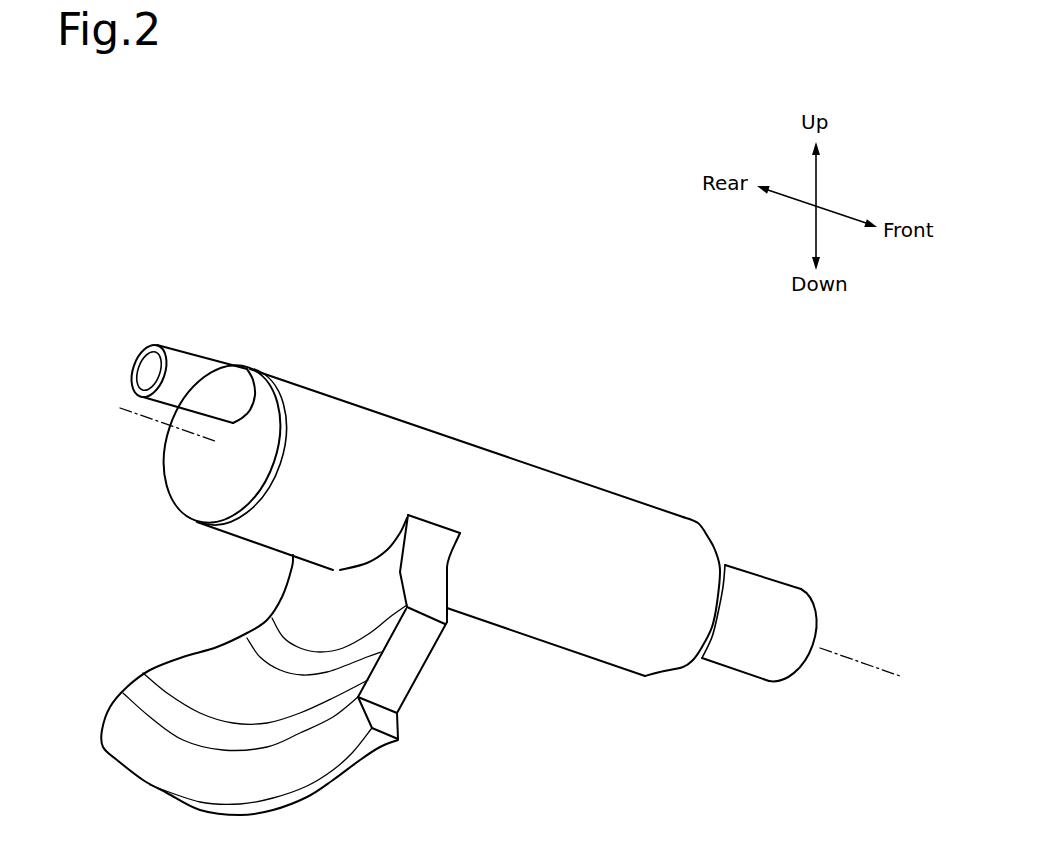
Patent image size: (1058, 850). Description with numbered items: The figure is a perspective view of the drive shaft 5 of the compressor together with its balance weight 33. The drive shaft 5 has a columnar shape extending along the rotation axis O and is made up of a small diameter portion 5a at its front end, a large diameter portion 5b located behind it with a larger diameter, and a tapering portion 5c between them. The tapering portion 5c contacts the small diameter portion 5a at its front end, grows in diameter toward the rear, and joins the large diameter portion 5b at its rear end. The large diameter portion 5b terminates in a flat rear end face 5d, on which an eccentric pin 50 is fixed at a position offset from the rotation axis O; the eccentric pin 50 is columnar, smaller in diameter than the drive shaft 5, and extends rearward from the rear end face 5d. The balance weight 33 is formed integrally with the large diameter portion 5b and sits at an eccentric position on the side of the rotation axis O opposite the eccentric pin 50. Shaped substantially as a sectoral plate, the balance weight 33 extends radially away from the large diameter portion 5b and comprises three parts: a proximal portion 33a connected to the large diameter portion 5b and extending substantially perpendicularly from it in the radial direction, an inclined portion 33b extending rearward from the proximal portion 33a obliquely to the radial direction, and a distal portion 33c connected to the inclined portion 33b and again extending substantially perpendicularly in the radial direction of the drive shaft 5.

The drive shaft 5 is at (495, 425).
The small diameter portion 5a is at (753, 657).
The large diameter portion 5b is at (610, 502).
The tapering portion 5c is at (725, 563).
The rear end face 5d is at (197, 478).
The eccentric pin 50 is at (192, 370).
The balance weight 33 is at (228, 632).
The proximal portion 33a is at (373, 590).
The inclined portion 33b is at (347, 652).
The distal portion 33c is at (335, 733).